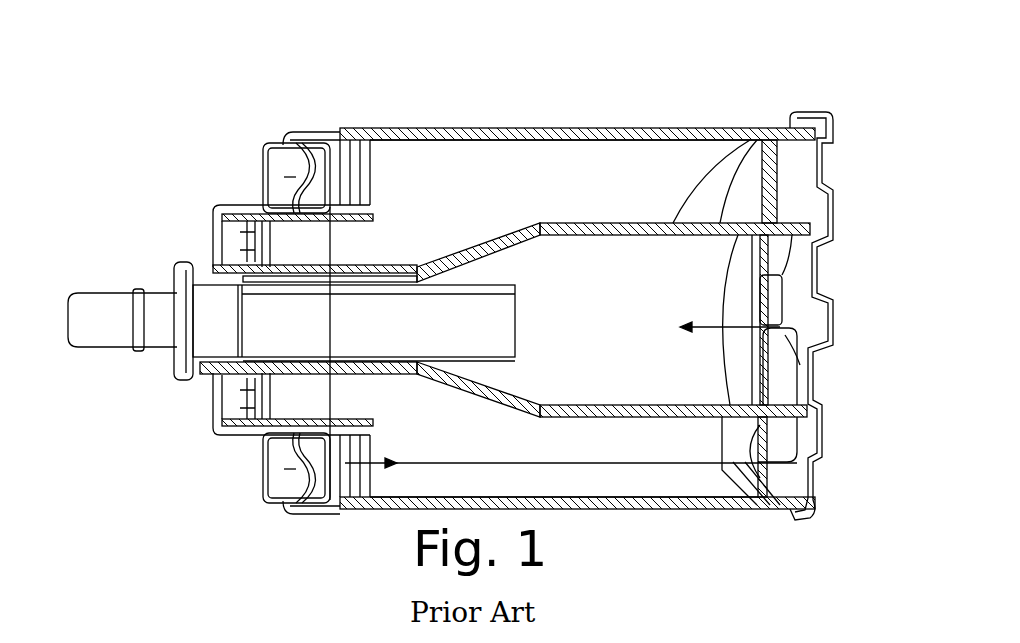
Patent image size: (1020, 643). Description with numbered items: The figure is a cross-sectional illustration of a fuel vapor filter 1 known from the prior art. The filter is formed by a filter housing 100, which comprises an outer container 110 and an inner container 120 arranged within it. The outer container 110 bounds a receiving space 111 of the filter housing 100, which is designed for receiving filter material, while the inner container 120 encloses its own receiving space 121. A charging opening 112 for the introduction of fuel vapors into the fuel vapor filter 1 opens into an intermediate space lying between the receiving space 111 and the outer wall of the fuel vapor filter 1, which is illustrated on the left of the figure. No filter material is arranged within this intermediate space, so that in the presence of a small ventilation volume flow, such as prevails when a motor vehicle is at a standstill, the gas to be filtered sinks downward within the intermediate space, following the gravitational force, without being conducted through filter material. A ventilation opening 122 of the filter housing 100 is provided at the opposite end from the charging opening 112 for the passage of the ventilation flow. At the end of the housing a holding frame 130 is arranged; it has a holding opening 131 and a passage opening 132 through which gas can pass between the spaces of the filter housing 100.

The fuel vapor filter 1 is at (822, 84).
The filter housing 100 is at (466, 299).
The outer container 110 is at (600, 130).
The receiving space 111 is at (658, 173).
The charging opening 112 is at (252, 178).
The inner container 120 is at (592, 223).
The receiving space 121 is at (737, 132).
The ventilation opening 122 is at (55, 316).
The holding frame 130 is at (773, 505).
The holding opening 131 is at (760, 275).
The passage opening 132 is at (733, 505).